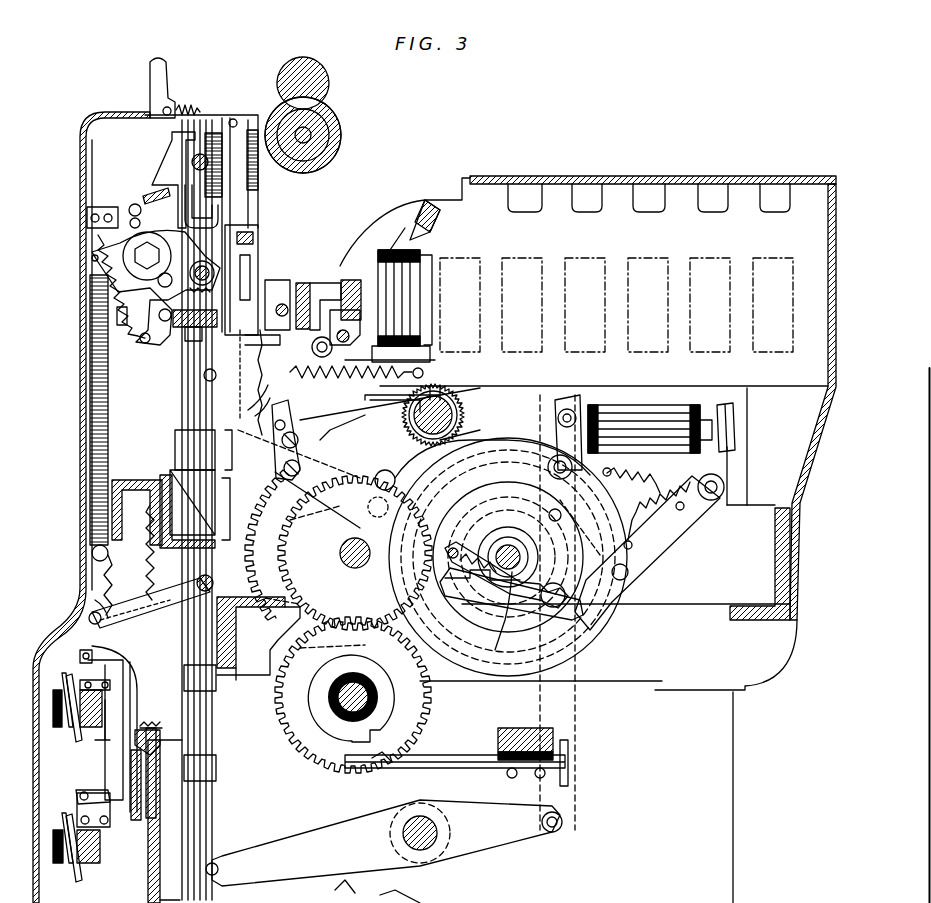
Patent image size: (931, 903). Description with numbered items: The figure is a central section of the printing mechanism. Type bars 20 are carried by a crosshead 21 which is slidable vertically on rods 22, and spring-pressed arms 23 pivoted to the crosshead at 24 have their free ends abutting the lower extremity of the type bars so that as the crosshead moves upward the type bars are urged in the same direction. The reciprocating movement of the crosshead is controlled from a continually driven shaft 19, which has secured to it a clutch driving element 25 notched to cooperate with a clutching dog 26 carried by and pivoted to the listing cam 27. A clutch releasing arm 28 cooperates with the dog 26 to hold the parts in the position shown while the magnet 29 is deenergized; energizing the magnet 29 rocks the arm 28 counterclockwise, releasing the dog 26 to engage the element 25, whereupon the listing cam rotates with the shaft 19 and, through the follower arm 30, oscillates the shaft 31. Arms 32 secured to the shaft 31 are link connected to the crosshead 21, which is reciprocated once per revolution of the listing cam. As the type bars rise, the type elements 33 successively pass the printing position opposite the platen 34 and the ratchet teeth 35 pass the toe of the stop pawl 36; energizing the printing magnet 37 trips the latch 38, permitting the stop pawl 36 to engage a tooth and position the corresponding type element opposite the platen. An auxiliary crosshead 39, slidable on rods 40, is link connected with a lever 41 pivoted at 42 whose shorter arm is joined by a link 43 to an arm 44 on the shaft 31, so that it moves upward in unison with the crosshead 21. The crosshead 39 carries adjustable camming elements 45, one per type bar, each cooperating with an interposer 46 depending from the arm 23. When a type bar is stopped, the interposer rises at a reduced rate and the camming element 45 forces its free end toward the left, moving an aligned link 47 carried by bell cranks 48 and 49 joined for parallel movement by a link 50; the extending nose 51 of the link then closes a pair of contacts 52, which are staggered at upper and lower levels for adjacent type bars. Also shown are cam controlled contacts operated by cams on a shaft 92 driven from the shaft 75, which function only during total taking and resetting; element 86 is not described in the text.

The shaft 19 is at (512, 590).
The type bars 20 is at (242, 240).
The crosshead 21 is at (188, 472).
The rods 22 is at (190, 400).
The spring-pressed arms 23 is at (150, 606).
The pivot 24 is at (116, 606).
The clutch driving element 25 is at (508, 530).
The clutching dog 26 is at (500, 595).
The listing cam 27 is at (596, 626).
The clutch releasing arm 28 is at (672, 526).
The magnet 29 is at (622, 418).
The follower arm 30 is at (468, 431).
The shaft 31 is at (458, 422).
The arms 32 is at (348, 424).
The type elements 33 is at (320, 170).
The platen 34 is at (343, 128).
The ratchet teeth 35 is at (414, 378).
The stop pawl 36 is at (266, 318).
The printing magnet 37 is at (404, 276).
The latch 38 is at (300, 328).
The auxiliary crosshead 39 is at (172, 896).
The rods 40 is at (185, 712).
The lever 41 is at (304, 850).
The pivot 42 is at (432, 845).
The link 43 is at (562, 796).
The arm 44 is at (560, 432).
The camming elements 45 is at (152, 748).
The interposer 46 is at (139, 672).
The link 47 is at (125, 692).
The bell crank 48 is at (94, 648).
The bell crank 49 is at (100, 826).
The link 50 is at (112, 754).
The nose 51 is at (84, 655).
The contacts 52 is at (80, 666).
The shaft 75 is at (352, 566).
The member 86 is at (377, 887).
The shaft 92 is at (375, 710).